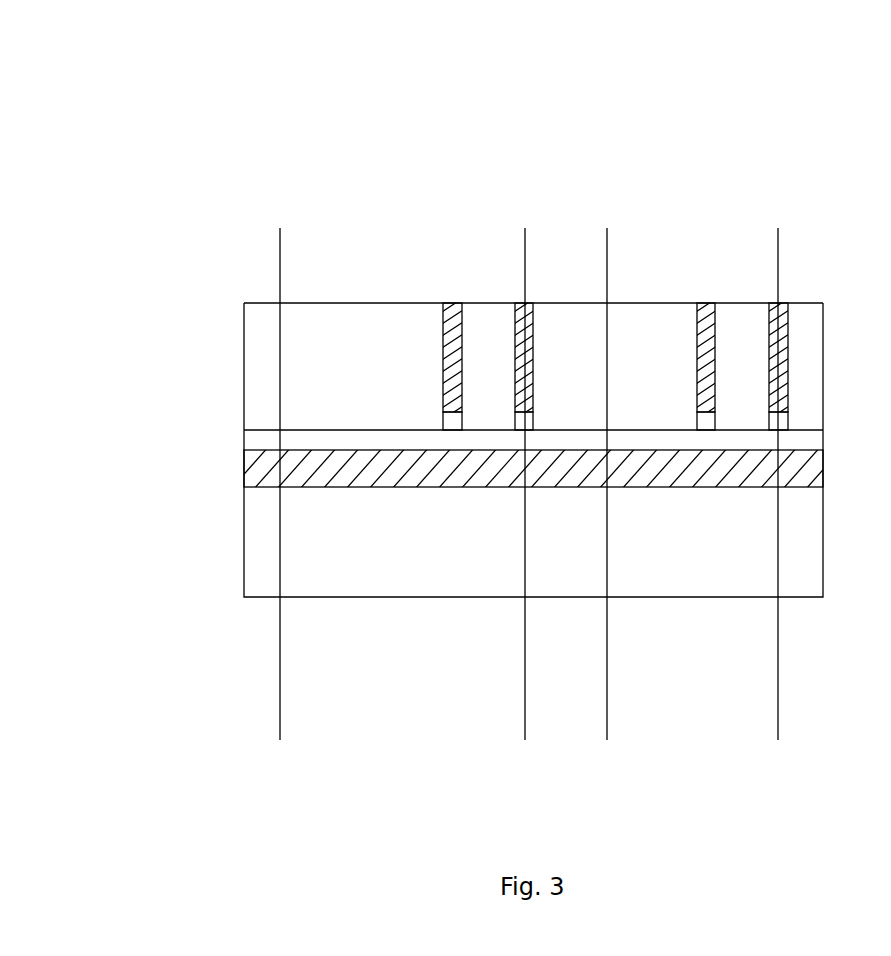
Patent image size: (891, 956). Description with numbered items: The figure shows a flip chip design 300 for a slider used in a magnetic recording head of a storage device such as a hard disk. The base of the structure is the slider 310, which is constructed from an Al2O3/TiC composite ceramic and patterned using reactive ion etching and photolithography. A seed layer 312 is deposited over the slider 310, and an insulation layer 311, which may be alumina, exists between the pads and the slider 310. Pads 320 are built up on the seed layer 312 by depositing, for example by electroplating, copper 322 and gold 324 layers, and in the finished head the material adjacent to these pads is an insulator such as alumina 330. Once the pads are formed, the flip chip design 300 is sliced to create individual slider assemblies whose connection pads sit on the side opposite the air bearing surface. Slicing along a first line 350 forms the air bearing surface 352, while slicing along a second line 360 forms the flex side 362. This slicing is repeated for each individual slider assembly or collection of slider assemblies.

The flip chip design 300 is at (152, 120).
The slider 310 is at (445, 540).
The insulation layer 311 is at (244, 475).
The seed layer 312 is at (257, 441).
The pads 320 is at (741, 293).
The copper 322 is at (615, 398).
The gold 324 is at (516, 345).
The alumina 330 is at (777, 425).
The first line 350 is at (280, 613).
The air bearing surface 352 is at (300, 762).
The second line 360 is at (517, 670).
The flex side 362 is at (478, 778).